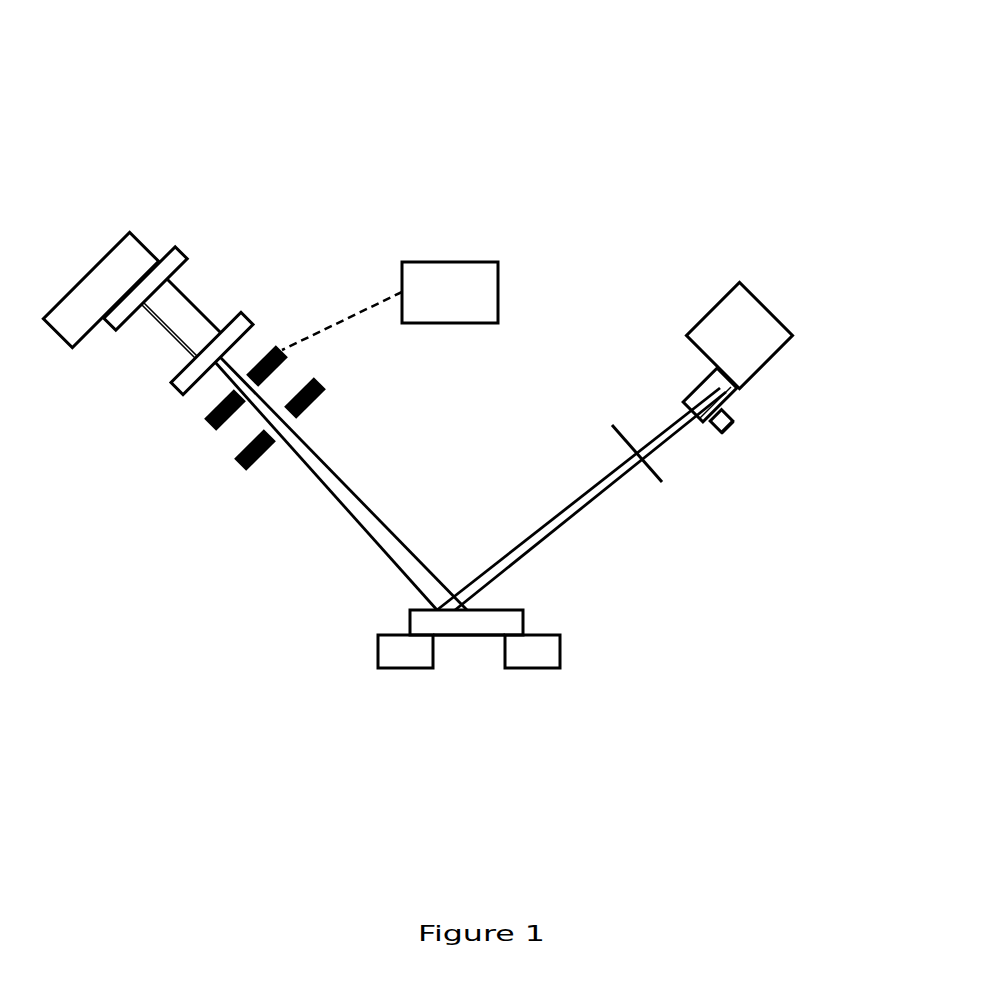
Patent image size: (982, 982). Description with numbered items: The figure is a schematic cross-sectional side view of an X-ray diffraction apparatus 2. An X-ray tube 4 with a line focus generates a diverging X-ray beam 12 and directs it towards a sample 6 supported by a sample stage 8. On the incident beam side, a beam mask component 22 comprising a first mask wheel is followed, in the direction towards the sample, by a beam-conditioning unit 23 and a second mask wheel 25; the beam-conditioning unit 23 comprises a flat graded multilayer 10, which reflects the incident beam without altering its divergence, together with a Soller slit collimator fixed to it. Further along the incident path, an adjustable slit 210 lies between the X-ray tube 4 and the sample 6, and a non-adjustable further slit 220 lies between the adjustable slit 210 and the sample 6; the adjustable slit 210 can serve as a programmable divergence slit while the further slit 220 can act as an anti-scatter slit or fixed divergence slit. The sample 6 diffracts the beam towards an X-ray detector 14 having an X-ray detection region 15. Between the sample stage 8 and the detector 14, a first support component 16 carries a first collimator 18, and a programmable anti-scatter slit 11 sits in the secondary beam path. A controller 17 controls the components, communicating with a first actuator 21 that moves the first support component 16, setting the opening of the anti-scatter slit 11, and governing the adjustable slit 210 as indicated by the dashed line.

The X-ray apparatus 2 is at (690, 66).
The X-ray tube 4 is at (115, 230).
The beam mask component 22 is at (187, 257).
The beam-conditioning unit 23 is at (177, 310).
The flat graded multilayer 10 is at (177, 338).
The second mask wheel 25 is at (248, 318).
The adjustable slit 210 is at (205, 418).
The non-adjustable further slit 220 is at (237, 462).
The X-ray beam 12 is at (308, 453).
The controller 17 is at (437, 285).
The X-ray detector 14 is at (723, 303).
The first collimator 18 is at (693, 388).
The X-ray detection region 15 is at (725, 403).
The first support component 16 is at (733, 420).
The first actuator 21 is at (733, 427).
The programmable anti-scatter slit 11 is at (662, 482).
The sample 6 is at (523, 612).
The sample stage 8 is at (378, 660).